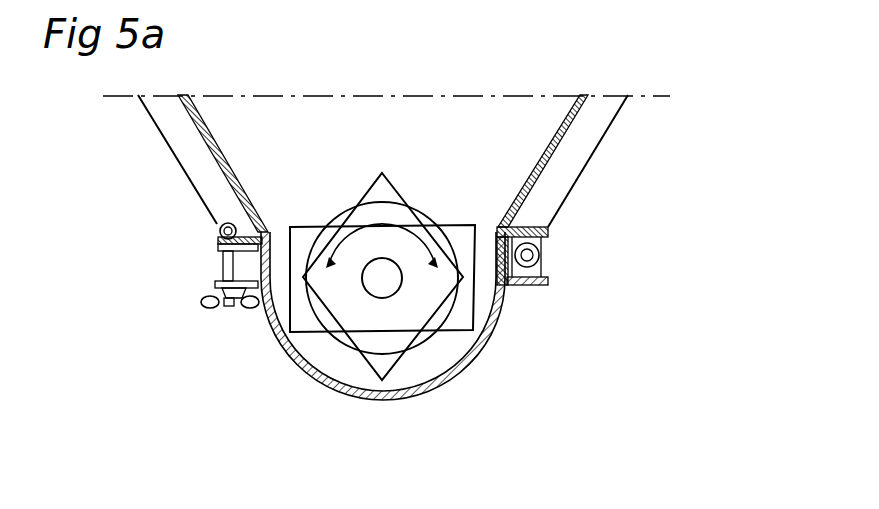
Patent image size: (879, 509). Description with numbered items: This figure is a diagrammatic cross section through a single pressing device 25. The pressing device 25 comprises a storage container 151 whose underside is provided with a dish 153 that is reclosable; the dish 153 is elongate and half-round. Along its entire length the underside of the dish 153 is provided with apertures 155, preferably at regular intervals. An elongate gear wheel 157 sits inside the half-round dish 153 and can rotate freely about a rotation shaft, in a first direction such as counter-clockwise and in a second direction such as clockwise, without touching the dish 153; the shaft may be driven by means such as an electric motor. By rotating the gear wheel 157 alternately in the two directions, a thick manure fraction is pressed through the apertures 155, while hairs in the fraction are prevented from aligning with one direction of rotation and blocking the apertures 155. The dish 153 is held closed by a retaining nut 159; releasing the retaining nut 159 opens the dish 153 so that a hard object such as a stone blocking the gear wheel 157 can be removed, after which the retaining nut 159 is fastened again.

The storage container 151 is at (600, 122).
The pressing device 25 is at (592, 187).
The dish 153 is at (490, 332).
The apertures 155 is at (412, 398).
The gear wheel 157 is at (340, 323).
The retaining nut 159 is at (217, 313).